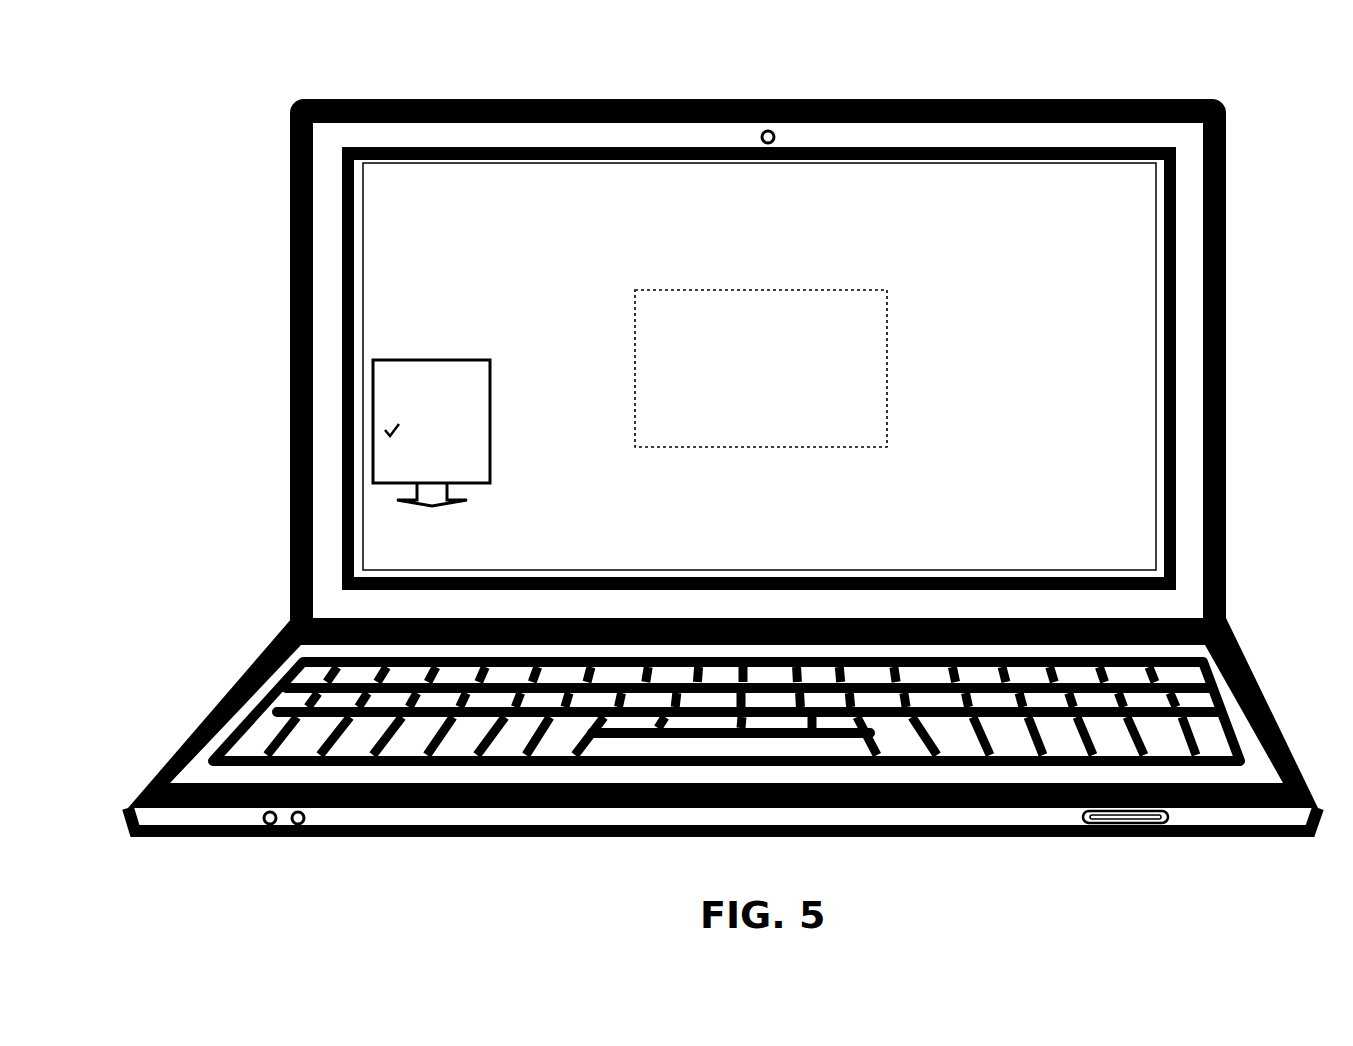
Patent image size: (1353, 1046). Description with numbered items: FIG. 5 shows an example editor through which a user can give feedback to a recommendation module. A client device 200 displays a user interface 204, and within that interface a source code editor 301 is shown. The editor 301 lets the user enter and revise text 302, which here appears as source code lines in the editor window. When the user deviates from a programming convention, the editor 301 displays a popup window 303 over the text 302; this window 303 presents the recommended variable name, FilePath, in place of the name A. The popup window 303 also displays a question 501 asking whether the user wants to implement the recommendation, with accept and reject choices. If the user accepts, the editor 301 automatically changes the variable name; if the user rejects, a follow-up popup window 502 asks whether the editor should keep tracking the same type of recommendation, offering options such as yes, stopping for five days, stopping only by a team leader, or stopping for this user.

The client device 200 is at (917, 775).
The user interface 204 is at (362, 170).
The source code editor 301 is at (605, 182).
The text 302 is at (385, 503).
The popup window 303 is at (373, 443).
The question 501 is at (475, 445).
The popup window 502 is at (890, 407).